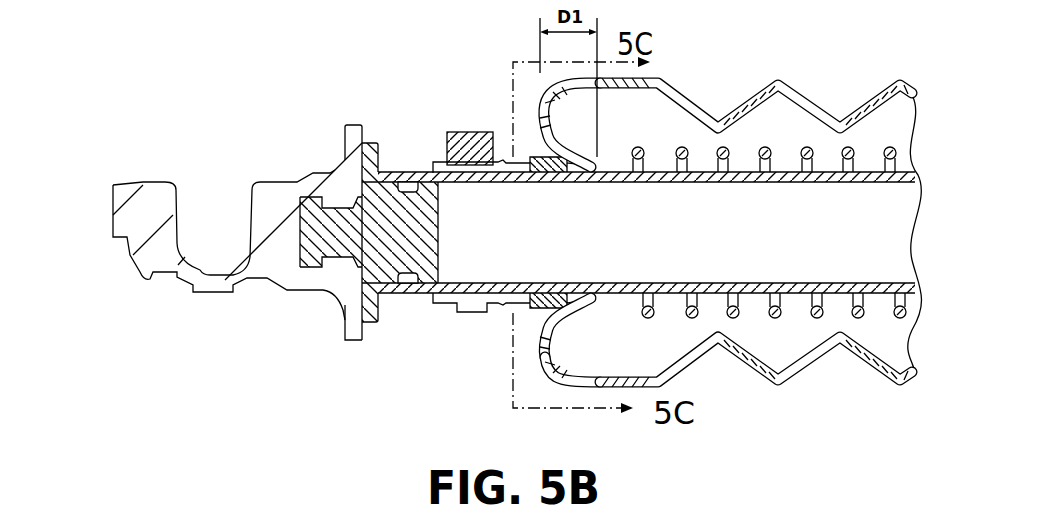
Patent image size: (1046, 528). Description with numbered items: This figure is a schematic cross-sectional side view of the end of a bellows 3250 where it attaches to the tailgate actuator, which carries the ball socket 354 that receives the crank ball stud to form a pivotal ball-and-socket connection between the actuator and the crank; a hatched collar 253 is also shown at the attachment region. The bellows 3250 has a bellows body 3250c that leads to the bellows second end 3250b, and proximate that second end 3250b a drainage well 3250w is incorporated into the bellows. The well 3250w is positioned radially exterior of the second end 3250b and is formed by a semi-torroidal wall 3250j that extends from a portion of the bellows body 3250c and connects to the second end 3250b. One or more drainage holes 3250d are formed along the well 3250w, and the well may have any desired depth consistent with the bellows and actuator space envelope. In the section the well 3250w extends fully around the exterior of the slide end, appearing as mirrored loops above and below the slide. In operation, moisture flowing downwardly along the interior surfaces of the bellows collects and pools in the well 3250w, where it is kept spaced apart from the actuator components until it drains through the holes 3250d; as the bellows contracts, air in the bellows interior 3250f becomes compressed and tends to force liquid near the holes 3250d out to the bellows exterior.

The ball socket 354 is at (213, 222).
The collar 253 is at (458, 132).
The bellows 3250 is at (666, 229).
The bellows second end 3250b is at (488, 303).
The bellows body 3250c is at (745, 110).
The drainage hole 3250d is at (537, 117).
The bellows interior 3250f is at (778, 338).
The semi-torroidal wall 3250j is at (548, 373).
The drainage well 3250w is at (650, 357).